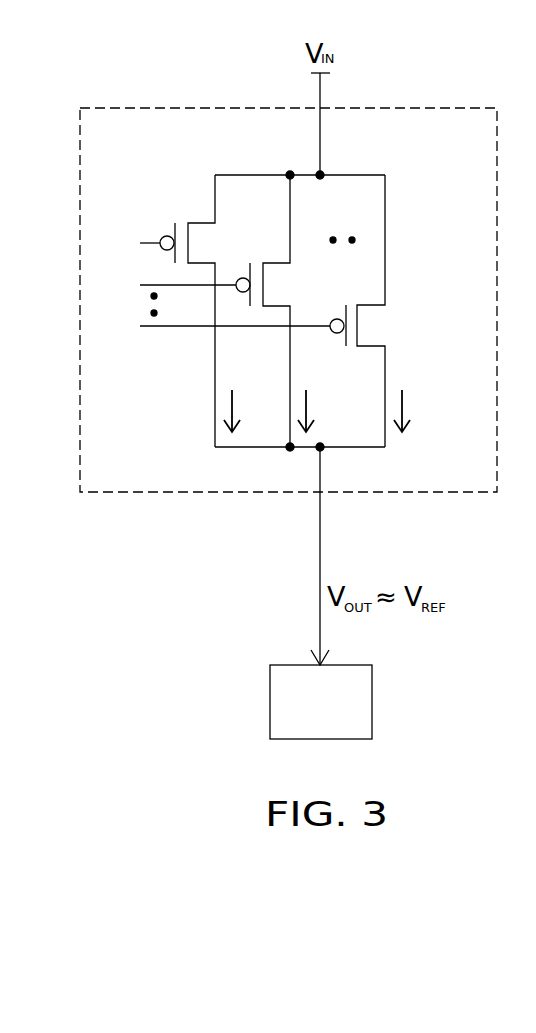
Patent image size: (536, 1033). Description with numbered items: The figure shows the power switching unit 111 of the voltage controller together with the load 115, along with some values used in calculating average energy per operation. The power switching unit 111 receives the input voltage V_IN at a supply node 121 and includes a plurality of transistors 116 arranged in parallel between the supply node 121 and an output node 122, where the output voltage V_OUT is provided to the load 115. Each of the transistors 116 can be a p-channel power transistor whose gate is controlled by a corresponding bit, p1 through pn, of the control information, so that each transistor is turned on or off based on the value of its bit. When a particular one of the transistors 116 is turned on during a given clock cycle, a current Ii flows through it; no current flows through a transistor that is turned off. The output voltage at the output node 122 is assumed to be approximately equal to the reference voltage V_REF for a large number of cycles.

The power switching unit 111 is at (80, 128).
The node 121 is at (323, 143).
The node 122 is at (325, 535).
The transistors 116 is at (275, 311).
The load 115 is at (270, 711).